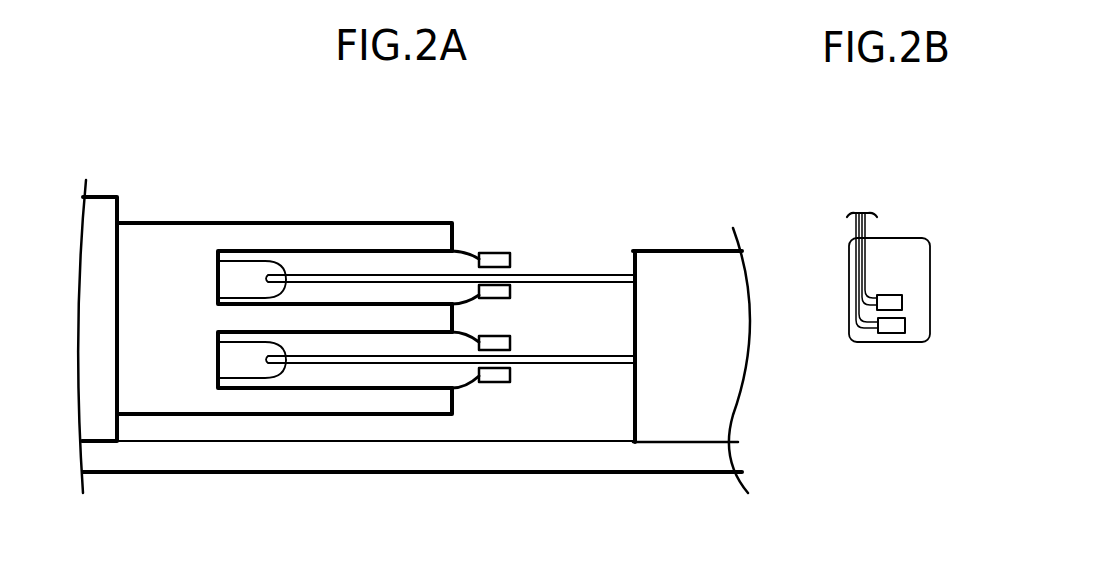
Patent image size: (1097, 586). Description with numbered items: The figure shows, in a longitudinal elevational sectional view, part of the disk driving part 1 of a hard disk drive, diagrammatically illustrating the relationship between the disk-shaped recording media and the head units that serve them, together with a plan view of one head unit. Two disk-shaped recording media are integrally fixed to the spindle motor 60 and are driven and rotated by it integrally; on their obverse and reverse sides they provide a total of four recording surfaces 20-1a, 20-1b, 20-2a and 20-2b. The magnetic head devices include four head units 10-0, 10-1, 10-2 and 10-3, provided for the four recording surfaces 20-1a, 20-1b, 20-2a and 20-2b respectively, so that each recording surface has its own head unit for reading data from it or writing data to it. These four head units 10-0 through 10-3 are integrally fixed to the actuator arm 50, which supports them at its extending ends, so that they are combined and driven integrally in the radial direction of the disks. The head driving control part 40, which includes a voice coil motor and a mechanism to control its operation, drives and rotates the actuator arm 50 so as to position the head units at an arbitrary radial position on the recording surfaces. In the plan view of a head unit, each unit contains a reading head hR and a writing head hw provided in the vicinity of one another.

In FIG. 2A, the disk driving part 1 is at (186, 91).
In FIG. 2A, the head driving control part 40 is at (95, 192).
In FIG. 2A, the actuator arm 50 is at (248, 222).
In FIG. 2A, the spindle motor 60 is at (683, 458).
In FIG. 2A, the recording surface 20-2b is at (218, 261).
In FIG. 2A, the recording surface 20-2a is at (218, 295).
In FIG. 2A, the recording surface 20-1b is at (218, 342).
In FIG. 2A, the recording surface 20-1a is at (218, 375).
In FIG. 2A, the head unit 10-3 is at (512, 259).
In FIG. 2A, the head unit 10-2 is at (512, 292).
In FIG. 2A, the head unit 10-1 is at (512, 342).
In FIG. 2A, the head unit 10-0 is at (512, 376).
In FIG. 2B, the writing head hw is at (896, 295).
In FIG. 2B, the reading head hR is at (898, 343).